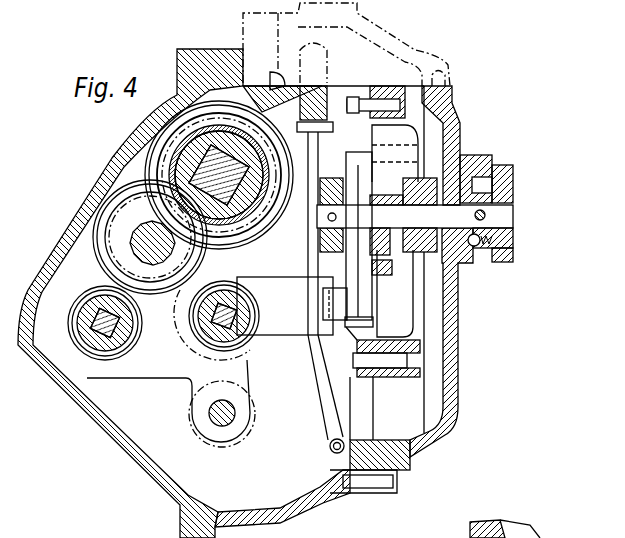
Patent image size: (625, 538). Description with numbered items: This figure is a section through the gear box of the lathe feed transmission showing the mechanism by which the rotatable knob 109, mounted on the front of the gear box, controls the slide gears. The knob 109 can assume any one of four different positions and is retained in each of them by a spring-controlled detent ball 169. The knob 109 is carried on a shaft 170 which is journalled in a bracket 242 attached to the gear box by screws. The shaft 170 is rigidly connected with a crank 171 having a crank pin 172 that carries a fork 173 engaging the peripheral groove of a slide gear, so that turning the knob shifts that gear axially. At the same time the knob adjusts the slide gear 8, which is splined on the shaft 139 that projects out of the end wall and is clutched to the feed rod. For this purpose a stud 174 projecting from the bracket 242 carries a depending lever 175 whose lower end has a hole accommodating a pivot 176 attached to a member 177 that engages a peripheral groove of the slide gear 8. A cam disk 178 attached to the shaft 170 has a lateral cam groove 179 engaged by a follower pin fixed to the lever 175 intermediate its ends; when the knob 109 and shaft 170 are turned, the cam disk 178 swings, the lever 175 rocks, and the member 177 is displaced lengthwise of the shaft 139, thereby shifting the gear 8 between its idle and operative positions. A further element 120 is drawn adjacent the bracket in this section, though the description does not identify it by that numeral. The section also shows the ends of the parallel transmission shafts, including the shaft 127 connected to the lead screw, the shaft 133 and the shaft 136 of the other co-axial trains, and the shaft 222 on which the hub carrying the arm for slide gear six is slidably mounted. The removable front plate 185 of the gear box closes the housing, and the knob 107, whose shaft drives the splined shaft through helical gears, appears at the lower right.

The slide gear 8 is at (200, 315).
The knob 107 is at (566, 534).
The rotatable knob 109 is at (494, 166).
The bushing 120 is at (403, 215).
The shaft 127 is at (219, 175).
The shaft 133 is at (150, 237).
The shaft 136 is at (88, 345).
The shaft 139 is at (210, 342).
The spring-controlled detent ball 169 is at (477, 247).
The shaft 170 is at (503, 214).
The crank 171 is at (319, 233).
The crank pin 172 is at (299, 233).
The fork 173 is at (345, 67).
The stud 174 is at (377, 157).
The depending lever 175 is at (353, 263).
The pivot 176 is at (328, 307).
The member 177 is at (298, 333).
The cam disk 178 is at (388, 275).
The lateral cam groove 179 is at (380, 257).
The removable front plate 185 is at (455, 381).
The shaft 222 is at (233, 418).
The bracket 242 is at (410, 128).